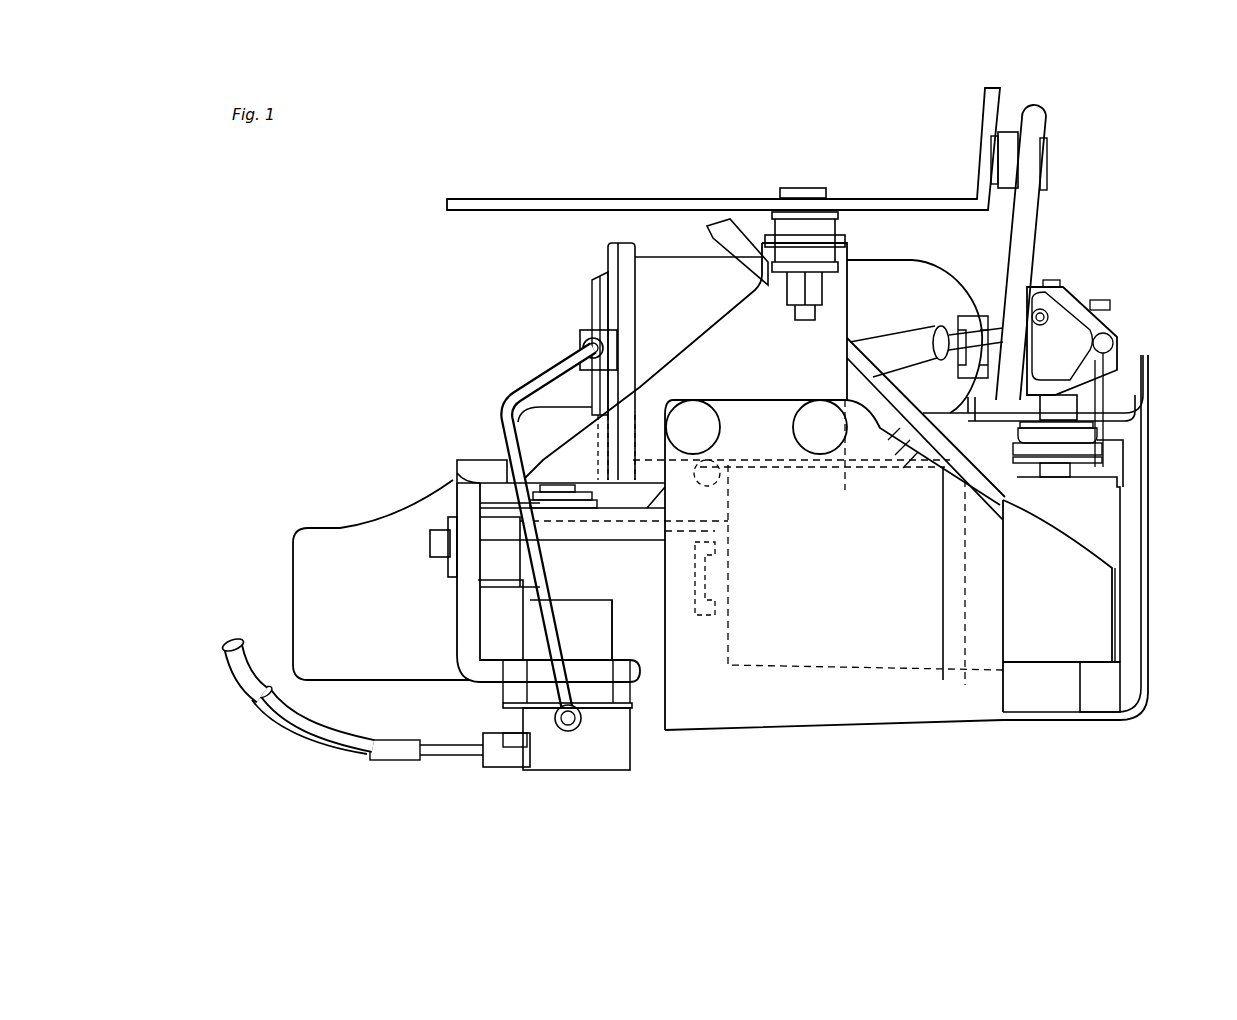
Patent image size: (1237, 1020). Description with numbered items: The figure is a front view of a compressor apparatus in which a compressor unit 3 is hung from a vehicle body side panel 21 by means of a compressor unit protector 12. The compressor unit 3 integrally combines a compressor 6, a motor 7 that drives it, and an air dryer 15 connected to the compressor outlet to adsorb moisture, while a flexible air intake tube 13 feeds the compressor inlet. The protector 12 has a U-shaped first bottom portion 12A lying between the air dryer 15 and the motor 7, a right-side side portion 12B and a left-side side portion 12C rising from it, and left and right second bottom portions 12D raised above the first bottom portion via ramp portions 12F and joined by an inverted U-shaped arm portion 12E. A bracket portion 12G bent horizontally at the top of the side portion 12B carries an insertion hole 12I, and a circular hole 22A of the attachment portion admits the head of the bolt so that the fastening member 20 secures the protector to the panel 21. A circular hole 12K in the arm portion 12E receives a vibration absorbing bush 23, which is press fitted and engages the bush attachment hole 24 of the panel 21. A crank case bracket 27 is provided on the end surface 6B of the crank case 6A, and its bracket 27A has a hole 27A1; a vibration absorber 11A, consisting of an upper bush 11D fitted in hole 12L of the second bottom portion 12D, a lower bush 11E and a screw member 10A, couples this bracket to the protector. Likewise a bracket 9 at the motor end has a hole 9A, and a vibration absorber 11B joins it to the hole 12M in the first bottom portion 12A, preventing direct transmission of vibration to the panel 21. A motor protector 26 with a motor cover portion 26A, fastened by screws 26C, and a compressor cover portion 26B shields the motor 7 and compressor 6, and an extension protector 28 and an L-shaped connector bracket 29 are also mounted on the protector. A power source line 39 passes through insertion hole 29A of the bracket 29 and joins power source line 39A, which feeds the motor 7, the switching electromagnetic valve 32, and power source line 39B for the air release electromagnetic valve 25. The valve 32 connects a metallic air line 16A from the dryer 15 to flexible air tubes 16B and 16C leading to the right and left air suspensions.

The vehicle body side panel 21 is at (553, 199).
The flexible air intake tube 13 is at (710, 198).
The insertion hole 12I is at (766, 234).
The circular hole 22A is at (780, 190).
The fastening member 20 is at (811, 183).
The bracket portion 12G is at (851, 237).
The power source line 39B is at (893, 363).
The compressor unit 3 is at (919, 261).
The bush attachment hole 24 is at (992, 140).
The vibration absorbing bush 23 is at (1018, 138).
The circular hole 12K is at (1048, 130).
The arm portion 12E is at (1023, 215).
The air release electromagnetic valve 25 is at (1075, 292).
The screw member 10A is at (1048, 390).
The hole 12L is at (1063, 405).
The second bottom portion 12D is at (1073, 420).
The vibration absorber 11A is at (1060, 432).
The upper bush 11D is at (1065, 447).
The hole 27A1 is at (1065, 462).
The lower bush 11E is at (1050, 482).
The bracket 27A is at (1097, 505).
The ramp portion 12F is at (935, 447).
The crank case bracket 27 is at (1118, 583).
The compressor cover portion 26B is at (1145, 600).
The crank case 6A is at (1100, 630).
The end surface 6B is at (1107, 655).
The compressor 6 is at (1110, 669).
The motor protector 26 is at (1128, 723).
The motor 7 is at (893, 647).
The motor cover portion 26A is at (780, 698).
The screw 26C is at (822, 432).
The compressor unit protector 12 is at (685, 343).
The air dryer 15 is at (665, 285).
The right-side side portion 12B is at (600, 310).
The left-side side portion 12C is at (552, 422).
The connector bracket 29 is at (480, 673).
The insertion hole 29A is at (447, 575).
The hole 12M is at (547, 479).
The first bottom portion 12A is at (470, 455).
The vibration absorber 11B is at (500, 490).
The hole 9A is at (535, 516).
The extension protector 28 is at (343, 536).
The power source line 39 is at (445, 567).
The bracket 9 is at (640, 520).
The switching electromagnetic valve 32 is at (585, 745).
The power source line 39A is at (623, 533).
The metallic air line 16A is at (548, 722).
The flexible air tube 16B is at (285, 713).
The flexible air tube 16C is at (243, 672).